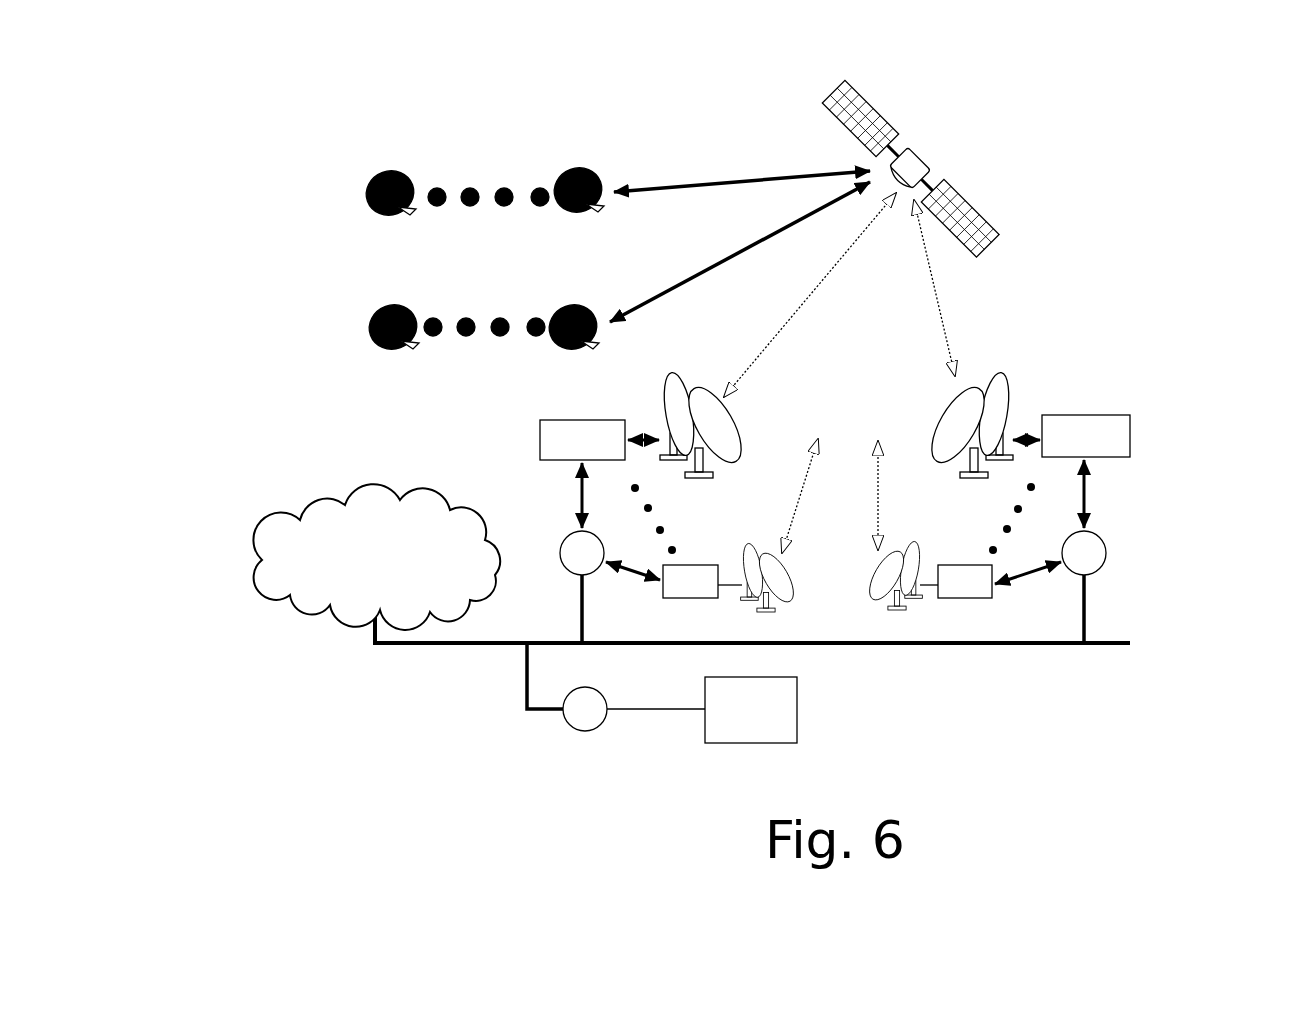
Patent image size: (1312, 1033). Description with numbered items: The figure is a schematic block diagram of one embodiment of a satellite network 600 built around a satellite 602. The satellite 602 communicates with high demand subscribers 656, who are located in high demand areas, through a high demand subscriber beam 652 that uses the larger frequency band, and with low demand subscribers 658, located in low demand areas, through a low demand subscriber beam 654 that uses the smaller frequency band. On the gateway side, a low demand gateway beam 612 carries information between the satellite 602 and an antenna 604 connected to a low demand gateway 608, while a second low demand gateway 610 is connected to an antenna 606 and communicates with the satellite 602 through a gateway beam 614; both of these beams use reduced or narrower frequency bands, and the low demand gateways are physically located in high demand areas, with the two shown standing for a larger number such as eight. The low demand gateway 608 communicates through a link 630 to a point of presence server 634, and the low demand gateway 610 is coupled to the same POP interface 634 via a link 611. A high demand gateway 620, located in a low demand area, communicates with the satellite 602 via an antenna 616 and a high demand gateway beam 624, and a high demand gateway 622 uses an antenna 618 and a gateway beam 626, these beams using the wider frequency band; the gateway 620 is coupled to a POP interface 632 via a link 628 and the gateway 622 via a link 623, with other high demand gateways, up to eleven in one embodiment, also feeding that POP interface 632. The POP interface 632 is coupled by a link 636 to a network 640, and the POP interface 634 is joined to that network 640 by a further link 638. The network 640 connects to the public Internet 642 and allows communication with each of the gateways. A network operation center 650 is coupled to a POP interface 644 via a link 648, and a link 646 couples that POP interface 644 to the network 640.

The satellite network 600 is at (985, 60).
The satellite 602 is at (960, 170).
The antenna 604 is at (1005, 378).
The antenna 606 is at (878, 612).
The low demand gateway 608 is at (1072, 415).
The low demand gateway 610 is at (965, 598).
The link 611 is at (1033, 575).
The low demand gateway beam 612 is at (935, 272).
The gateway beam 614 is at (878, 473).
The antenna 616 is at (706, 395).
The antenna 618 is at (775, 548).
The high demand gateway 620 is at (580, 420).
The high demand gateway 622 is at (718, 598).
The link 623 is at (633, 568).
The high demand gateway beam 624 is at (815, 293).
The gateway beam 626 is at (800, 493).
The link 628 is at (578, 476).
The link 630 is at (1088, 507).
The POP interface 632 is at (565, 537).
The point of presence server 634 is at (1107, 553).
The link 636 is at (580, 604).
The link 638 is at (1088, 610).
The network 640 is at (1025, 646).
The public Internet 642 is at (330, 610).
The POP interface 644 is at (604, 695).
The link 646 is at (525, 660).
The link 648 is at (677, 709).
The network operation center 650 is at (705, 718).
The high demand subscriber beam 652 is at (668, 186).
The low demand subscriber beam 654 is at (697, 272).
The high demand subscribers 656 is at (360, 190).
The low demand subscribers 658 is at (360, 322).